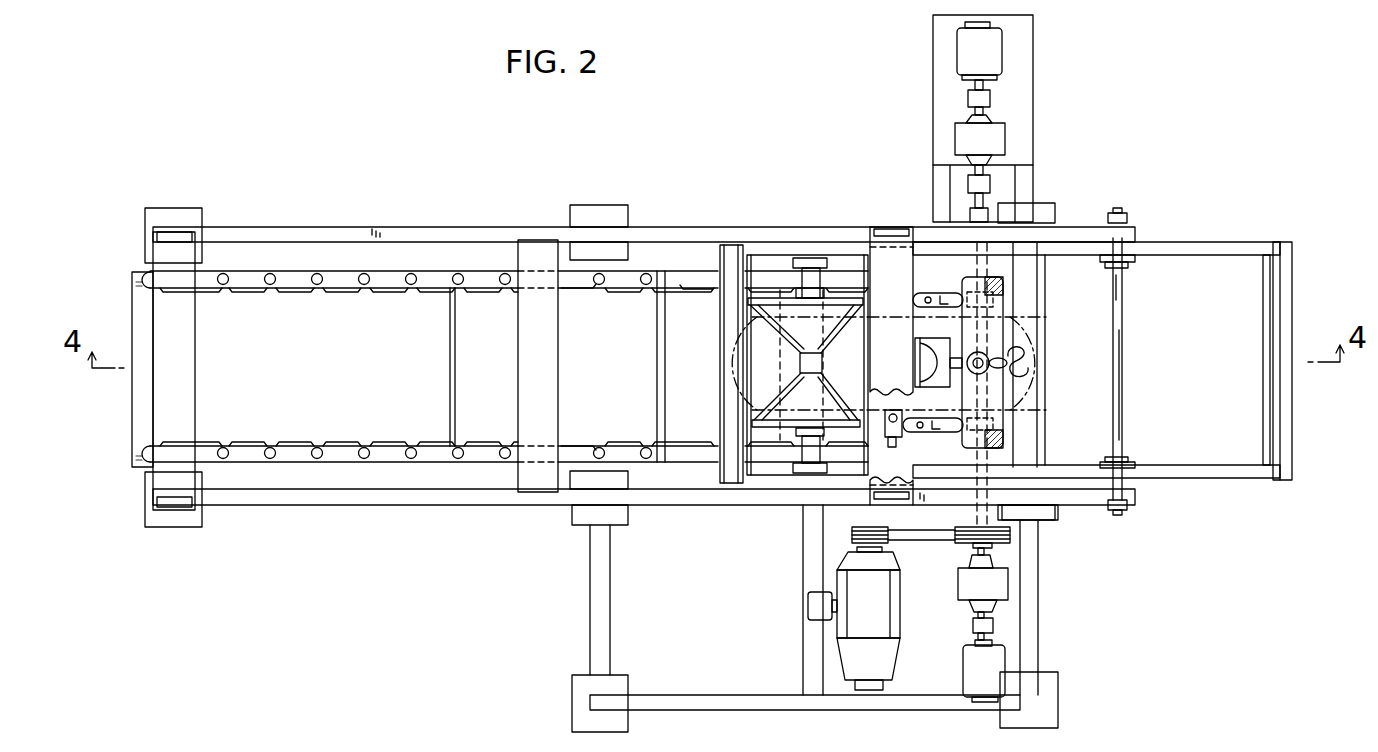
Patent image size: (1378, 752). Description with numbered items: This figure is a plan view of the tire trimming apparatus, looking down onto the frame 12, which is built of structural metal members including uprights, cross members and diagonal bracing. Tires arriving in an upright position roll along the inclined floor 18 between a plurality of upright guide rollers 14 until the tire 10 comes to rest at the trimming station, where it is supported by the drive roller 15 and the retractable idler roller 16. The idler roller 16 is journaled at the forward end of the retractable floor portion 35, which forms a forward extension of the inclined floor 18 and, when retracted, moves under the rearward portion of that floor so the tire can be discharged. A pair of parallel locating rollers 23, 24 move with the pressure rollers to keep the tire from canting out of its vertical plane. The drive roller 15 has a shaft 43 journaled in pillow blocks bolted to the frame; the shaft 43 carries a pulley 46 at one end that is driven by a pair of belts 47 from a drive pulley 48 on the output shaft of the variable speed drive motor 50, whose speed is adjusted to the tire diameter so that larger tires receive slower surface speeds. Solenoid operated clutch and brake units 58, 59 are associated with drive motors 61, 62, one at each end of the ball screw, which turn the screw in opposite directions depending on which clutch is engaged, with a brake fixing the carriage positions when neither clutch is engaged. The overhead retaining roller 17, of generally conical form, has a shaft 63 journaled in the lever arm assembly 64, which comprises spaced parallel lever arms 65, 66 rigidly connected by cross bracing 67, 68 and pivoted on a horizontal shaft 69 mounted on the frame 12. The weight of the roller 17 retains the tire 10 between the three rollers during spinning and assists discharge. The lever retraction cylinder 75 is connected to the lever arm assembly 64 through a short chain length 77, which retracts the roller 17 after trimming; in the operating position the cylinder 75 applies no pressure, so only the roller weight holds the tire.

The tire 10 is at (1047, 367).
The frame 12 is at (417, 228).
The upright guide rollers 14 is at (373, 292).
The drive roller 15 is at (1000, 308).
The retractable idler roller 16 is at (827, 280).
The overhead retaining roller 17 is at (838, 331).
The inclined floor 18 is at (257, 312).
The locating roller 23 is at (947, 433).
The locating roller 24 is at (945, 295).
The retractable floor portion 35 is at (497, 312).
The shaft 43 is at (982, 517).
The pulley 46 is at (1000, 545).
The belts 47 is at (927, 543).
The drive pulley 48 is at (858, 525).
The variable speed drive motor 50 is at (887, 615).
The solenoid operated clutch and brake unit 58 is at (1005, 583).
The solenoid operated clutch and brake unit 59 is at (1000, 140).
The drive motor 61 is at (965, 672).
The drive motor 62 is at (995, 50).
The shaft 63 is at (798, 290).
The lever arm assembly 64 is at (1130, 376).
The lever arm 65 is at (1213, 478).
The lever arm 66 is at (1218, 247).
The cross bracing 67 is at (1292, 405).
The cross bracing 68 is at (728, 255).
The horizontal shaft 69 is at (1118, 418).
The lever retraction cylinder 75 is at (935, 343).
The short chain length 77 is at (1030, 395).